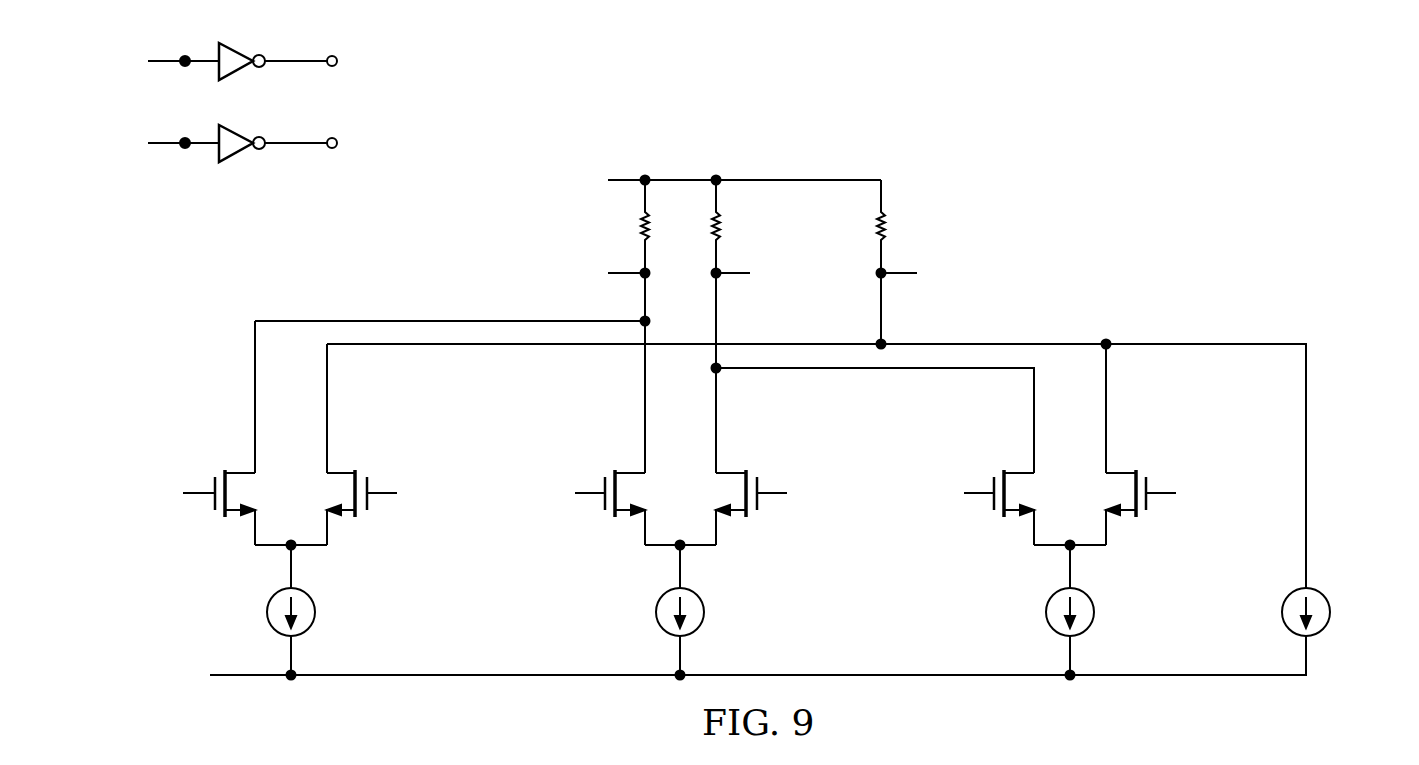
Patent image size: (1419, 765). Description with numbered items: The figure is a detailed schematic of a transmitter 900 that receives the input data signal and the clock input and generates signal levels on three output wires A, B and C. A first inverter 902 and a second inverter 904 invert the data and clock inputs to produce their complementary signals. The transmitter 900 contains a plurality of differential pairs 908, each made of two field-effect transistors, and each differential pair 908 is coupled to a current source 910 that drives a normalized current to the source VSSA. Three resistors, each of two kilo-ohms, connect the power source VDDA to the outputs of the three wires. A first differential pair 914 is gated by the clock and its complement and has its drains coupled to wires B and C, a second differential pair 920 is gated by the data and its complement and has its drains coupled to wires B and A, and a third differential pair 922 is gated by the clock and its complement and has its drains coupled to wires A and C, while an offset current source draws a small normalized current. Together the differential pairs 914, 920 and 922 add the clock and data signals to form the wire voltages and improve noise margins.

The transmitter 900 is at (1070, 62).
The inverter 902 is at (263, 33).
The inverter 904 is at (263, 115).
The differential pair 908 is at (226, 537).
The current source 910 is at (241, 613).
The first differential pair 914 is at (226, 447).
The second differential pair 920 is at (748, 447).
The third differential pair 922 is at (1136, 447).